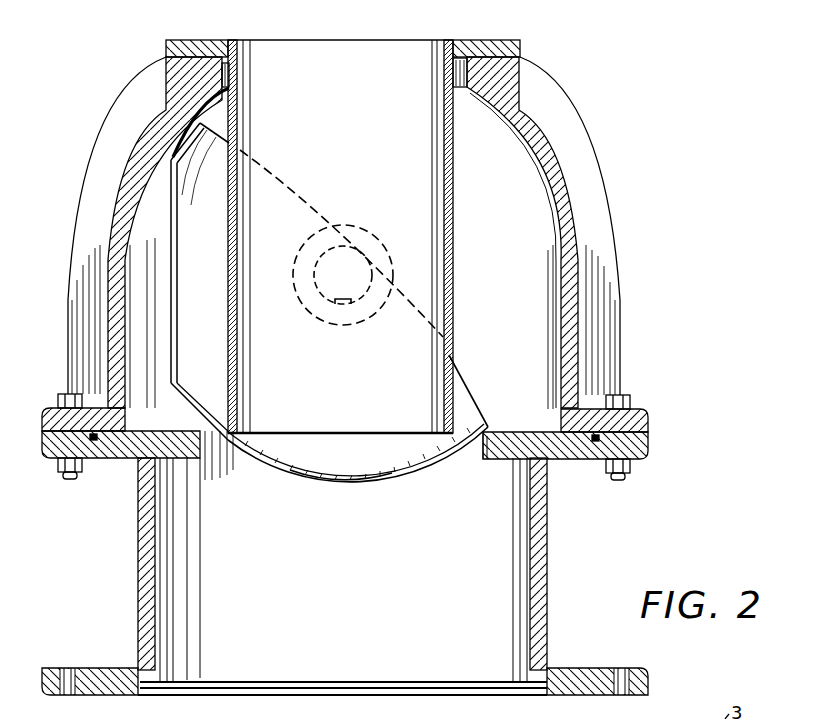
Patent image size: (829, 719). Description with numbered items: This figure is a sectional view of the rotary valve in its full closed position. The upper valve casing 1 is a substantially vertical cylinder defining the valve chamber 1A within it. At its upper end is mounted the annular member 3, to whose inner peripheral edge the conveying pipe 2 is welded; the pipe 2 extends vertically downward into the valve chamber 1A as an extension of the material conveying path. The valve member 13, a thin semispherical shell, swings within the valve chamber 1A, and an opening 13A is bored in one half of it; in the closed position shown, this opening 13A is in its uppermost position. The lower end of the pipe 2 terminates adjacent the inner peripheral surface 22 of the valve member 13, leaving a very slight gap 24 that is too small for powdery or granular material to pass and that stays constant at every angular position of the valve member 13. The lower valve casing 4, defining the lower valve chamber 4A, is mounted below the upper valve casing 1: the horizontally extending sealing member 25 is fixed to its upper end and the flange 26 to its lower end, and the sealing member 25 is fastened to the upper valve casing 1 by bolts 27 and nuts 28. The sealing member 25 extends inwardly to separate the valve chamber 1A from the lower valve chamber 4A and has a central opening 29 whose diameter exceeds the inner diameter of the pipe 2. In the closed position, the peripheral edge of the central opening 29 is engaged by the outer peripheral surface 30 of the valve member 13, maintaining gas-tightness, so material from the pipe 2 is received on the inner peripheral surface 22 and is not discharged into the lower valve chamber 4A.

The upper valve casing 1 is at (519, 117).
The valve chamber 1A is at (556, 192).
The conveying pipe 2 is at (456, 170).
The annular member 3 is at (467, 42).
The lower valve casing 4 is at (548, 511).
The lower valve chamber 4A is at (545, 557).
The valve member 13 is at (284, 484).
The opening 13A is at (171, 282).
The inner peripheral surface 22 is at (358, 482).
The gap 24 is at (224, 430).
The sealing member 25 is at (650, 446).
The flange 26 is at (573, 675).
The bolts 27 is at (62, 394).
The nuts 28 is at (58, 466).
The central opening 29 is at (476, 446).
The outer peripheral surface 30 is at (333, 488).